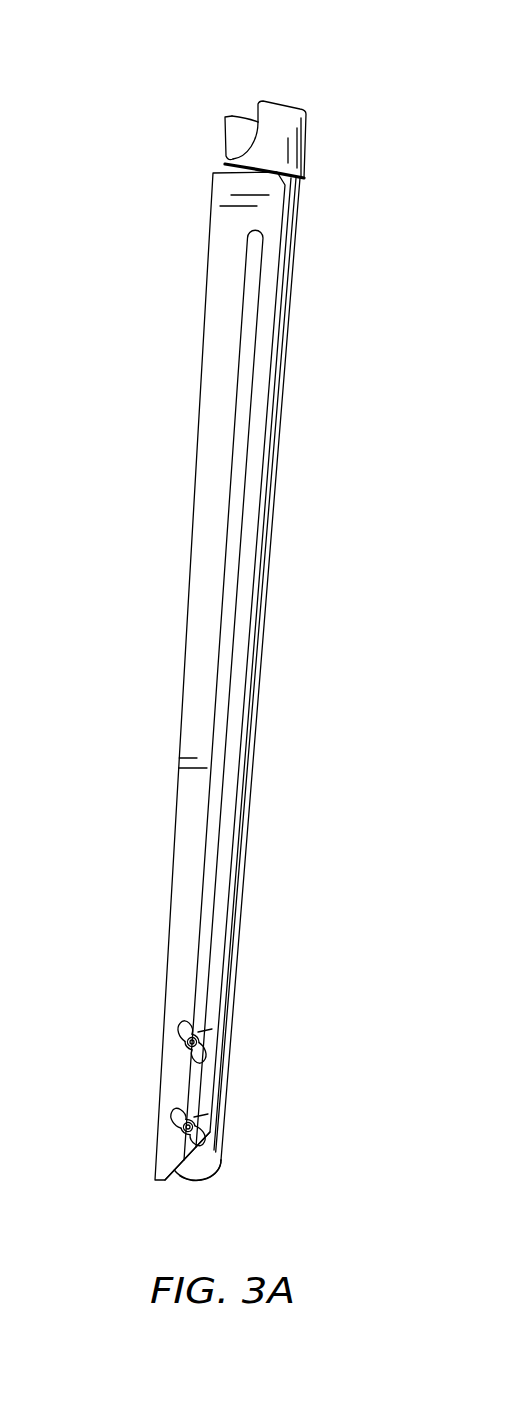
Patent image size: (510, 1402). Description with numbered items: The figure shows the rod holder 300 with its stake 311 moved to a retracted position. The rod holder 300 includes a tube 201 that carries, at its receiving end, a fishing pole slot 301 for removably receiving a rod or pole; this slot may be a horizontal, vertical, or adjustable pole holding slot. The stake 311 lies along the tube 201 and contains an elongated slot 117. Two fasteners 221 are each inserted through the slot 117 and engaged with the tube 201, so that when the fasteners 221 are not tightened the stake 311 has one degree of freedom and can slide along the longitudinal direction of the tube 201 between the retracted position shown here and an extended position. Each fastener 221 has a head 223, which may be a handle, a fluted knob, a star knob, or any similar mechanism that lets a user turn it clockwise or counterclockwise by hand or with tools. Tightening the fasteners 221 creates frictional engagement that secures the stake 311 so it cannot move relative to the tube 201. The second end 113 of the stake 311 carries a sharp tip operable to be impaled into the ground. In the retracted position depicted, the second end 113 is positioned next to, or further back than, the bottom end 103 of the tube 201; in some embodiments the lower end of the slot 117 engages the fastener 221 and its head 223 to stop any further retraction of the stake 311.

The rod holder 300 is at (110, 92).
The fishing pole slot 301 is at (230, 148).
The stake 311 is at (168, 516).
The slot 117 is at (250, 414).
The tube 201 is at (288, 675).
The head 223 is at (183, 1022).
The fastener 221 is at (227, 1026).
The second end 113 is at (185, 1159).
The bottom end 103 is at (205, 1183).